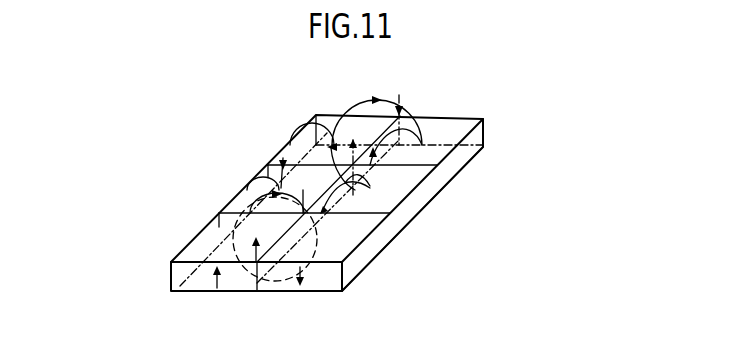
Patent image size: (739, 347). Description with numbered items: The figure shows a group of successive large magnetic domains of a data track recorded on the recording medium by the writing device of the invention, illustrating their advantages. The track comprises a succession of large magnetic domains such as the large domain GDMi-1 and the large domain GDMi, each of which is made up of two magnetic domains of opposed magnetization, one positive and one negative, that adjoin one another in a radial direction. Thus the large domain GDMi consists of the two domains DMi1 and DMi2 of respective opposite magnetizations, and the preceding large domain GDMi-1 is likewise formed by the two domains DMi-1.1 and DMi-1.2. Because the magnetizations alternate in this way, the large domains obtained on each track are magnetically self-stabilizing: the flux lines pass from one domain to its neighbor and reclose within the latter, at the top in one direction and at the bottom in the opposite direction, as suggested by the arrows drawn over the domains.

The magnetic domain DMi-1.1 is at (266, 156).
The magnetic domain DMi-1.2 is at (484, 132).
The magnetic domain DMi1 is at (226, 185).
The magnetic domain DMi2 is at (410, 207).
The large magnetic domain GDMi-1 is at (481, 155).
The large magnetic domain GDMi is at (415, 225).